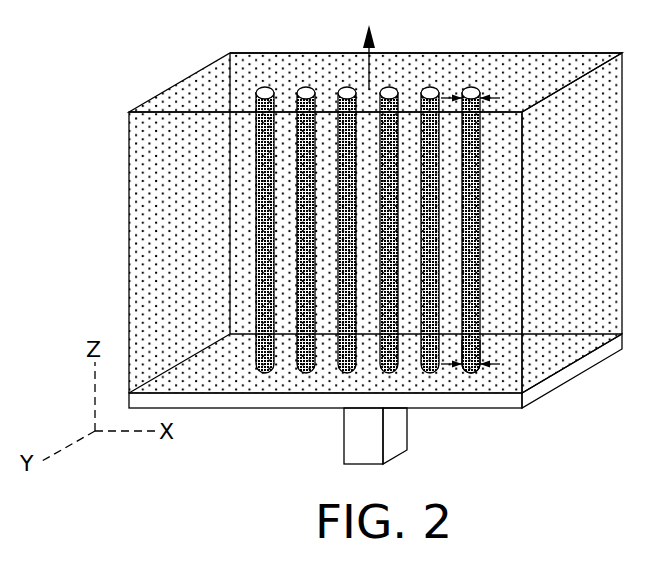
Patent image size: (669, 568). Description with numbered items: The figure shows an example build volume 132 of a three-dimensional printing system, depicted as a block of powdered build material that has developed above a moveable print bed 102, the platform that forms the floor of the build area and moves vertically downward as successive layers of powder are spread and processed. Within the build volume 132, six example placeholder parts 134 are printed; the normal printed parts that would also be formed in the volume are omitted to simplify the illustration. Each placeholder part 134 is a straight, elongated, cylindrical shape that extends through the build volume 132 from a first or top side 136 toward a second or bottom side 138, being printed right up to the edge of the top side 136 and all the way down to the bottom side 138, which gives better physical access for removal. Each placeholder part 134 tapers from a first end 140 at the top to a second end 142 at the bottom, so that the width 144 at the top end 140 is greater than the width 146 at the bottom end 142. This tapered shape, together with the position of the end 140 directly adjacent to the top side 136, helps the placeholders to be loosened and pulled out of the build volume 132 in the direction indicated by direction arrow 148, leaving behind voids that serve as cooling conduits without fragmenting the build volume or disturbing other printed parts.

The moveable print bed 102 is at (543, 395).
The build volume 132 is at (160, 82).
The placeholder parts 134 is at (256, 364).
The top side of the build volume 136 is at (588, 53).
The bottom side of the build volume 138 is at (255, 396).
The first end of placeholder part 140 is at (468, 87).
The second end of placeholder part 142 is at (470, 375).
The width at first end 144 is at (500, 98).
The width at second end 146 is at (499, 364).
The direction arrow 148 is at (368, 64).